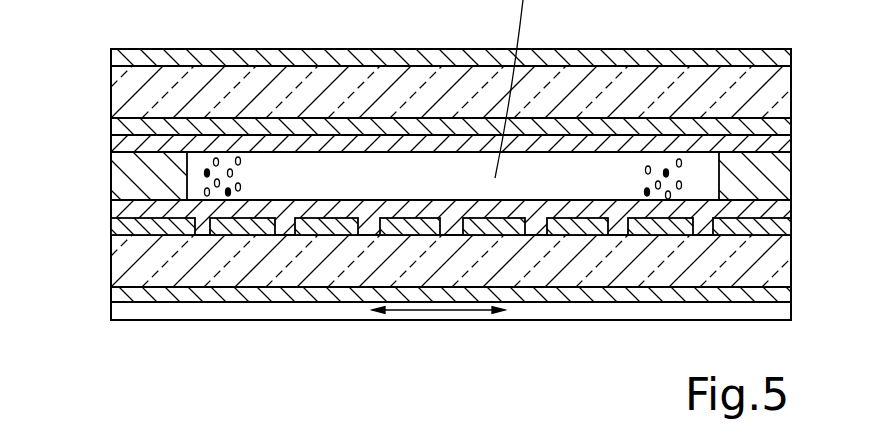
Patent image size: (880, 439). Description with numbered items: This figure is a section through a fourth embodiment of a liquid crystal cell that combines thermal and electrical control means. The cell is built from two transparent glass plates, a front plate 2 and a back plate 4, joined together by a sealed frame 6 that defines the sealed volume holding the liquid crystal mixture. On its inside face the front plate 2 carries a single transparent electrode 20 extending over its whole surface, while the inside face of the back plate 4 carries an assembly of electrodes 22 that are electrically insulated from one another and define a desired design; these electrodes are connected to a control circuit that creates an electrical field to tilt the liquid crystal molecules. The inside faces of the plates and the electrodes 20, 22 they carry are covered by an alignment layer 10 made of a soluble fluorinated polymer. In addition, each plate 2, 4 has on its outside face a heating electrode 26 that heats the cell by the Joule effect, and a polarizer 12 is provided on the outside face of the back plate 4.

The front plate 2 is at (123, 88).
The back plate 4 is at (128, 260).
The sealed frame 6 is at (142, 173).
The alignment layer 10 is at (772, 148).
The polarizer 12 is at (227, 308).
The electrode 20 is at (122, 127).
The electrodes 22 is at (660, 232).
The heating electrode 26 is at (123, 55).